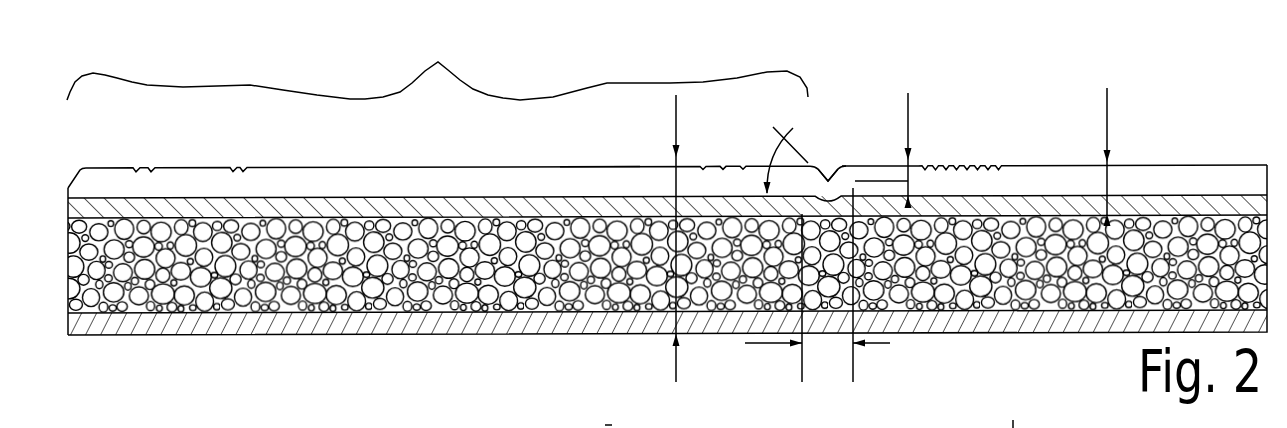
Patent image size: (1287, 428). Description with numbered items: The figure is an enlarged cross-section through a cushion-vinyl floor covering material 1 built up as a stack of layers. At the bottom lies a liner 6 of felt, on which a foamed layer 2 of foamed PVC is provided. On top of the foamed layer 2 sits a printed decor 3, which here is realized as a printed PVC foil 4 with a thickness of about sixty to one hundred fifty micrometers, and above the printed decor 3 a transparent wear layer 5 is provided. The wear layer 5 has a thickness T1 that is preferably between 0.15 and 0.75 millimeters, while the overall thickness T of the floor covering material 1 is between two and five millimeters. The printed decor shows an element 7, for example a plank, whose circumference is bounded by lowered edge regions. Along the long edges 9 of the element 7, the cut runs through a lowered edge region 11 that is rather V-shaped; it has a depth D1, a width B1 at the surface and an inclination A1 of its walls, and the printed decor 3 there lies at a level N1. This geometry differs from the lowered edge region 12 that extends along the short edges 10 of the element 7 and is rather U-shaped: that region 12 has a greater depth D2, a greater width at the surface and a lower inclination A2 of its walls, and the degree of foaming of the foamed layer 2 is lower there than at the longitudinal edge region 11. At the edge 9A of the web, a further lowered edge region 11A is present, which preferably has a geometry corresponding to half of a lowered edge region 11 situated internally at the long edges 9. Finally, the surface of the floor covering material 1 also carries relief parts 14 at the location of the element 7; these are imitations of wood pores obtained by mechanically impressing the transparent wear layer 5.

The floor covering material 1 is at (187, 351).
The foamed layer 2 is at (68, 272).
The printed decor 3 is at (329, 196).
The printed PVC foil 4 is at (420, 210).
The transparent wear layer 5 is at (597, 180).
The liner 6 is at (345, 334).
The element 7 is at (438, 62).
The long edges 9 is at (836, 157).
The edge of the web 9A is at (68, 249).
The short edges 10 is at (812, 320).
The lowered edge region 11 is at (833, 140).
The lowered edge region at the web edge 11A is at (72, 171).
The lowered edge region 12 is at (866, 427).
The relief parts 14 is at (992, 168).
The level N1 is at (855, 190).
The overall thickness T is at (689, 237).
The thickness of the wear layer T1 is at (1089, 157).
The depth D1 is at (926, 148).
The width B1 is at (817, 358).
The inclination A1 is at (800, 118).
The inclination A2 is at (690, 427).
The depth D2 is at (1030, 422).